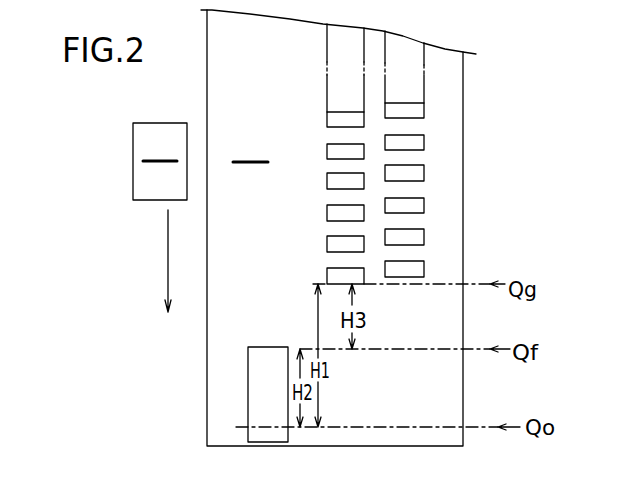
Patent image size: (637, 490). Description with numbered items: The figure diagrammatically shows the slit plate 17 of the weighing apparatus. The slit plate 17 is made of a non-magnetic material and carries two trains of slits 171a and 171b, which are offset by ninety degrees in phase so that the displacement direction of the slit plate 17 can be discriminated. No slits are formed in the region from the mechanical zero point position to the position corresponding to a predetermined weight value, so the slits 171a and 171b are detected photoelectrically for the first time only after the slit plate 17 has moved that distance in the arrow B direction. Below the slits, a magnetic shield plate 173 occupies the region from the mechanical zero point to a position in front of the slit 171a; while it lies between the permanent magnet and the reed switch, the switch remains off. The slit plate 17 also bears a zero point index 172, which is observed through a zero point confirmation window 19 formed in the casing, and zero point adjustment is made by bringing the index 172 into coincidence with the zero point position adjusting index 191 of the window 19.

The slit plate 17 is at (470, 213).
The slits 171a is at (327, 270).
The slits 171b is at (418, 274).
The zero point index 172 is at (253, 161).
The magnetic shield plate 173 is at (258, 394).
The zero point confirmation window 19 is at (165, 123).
The zero point position adjusting index 191 is at (157, 163).
The arrow B direction B is at (168, 257).